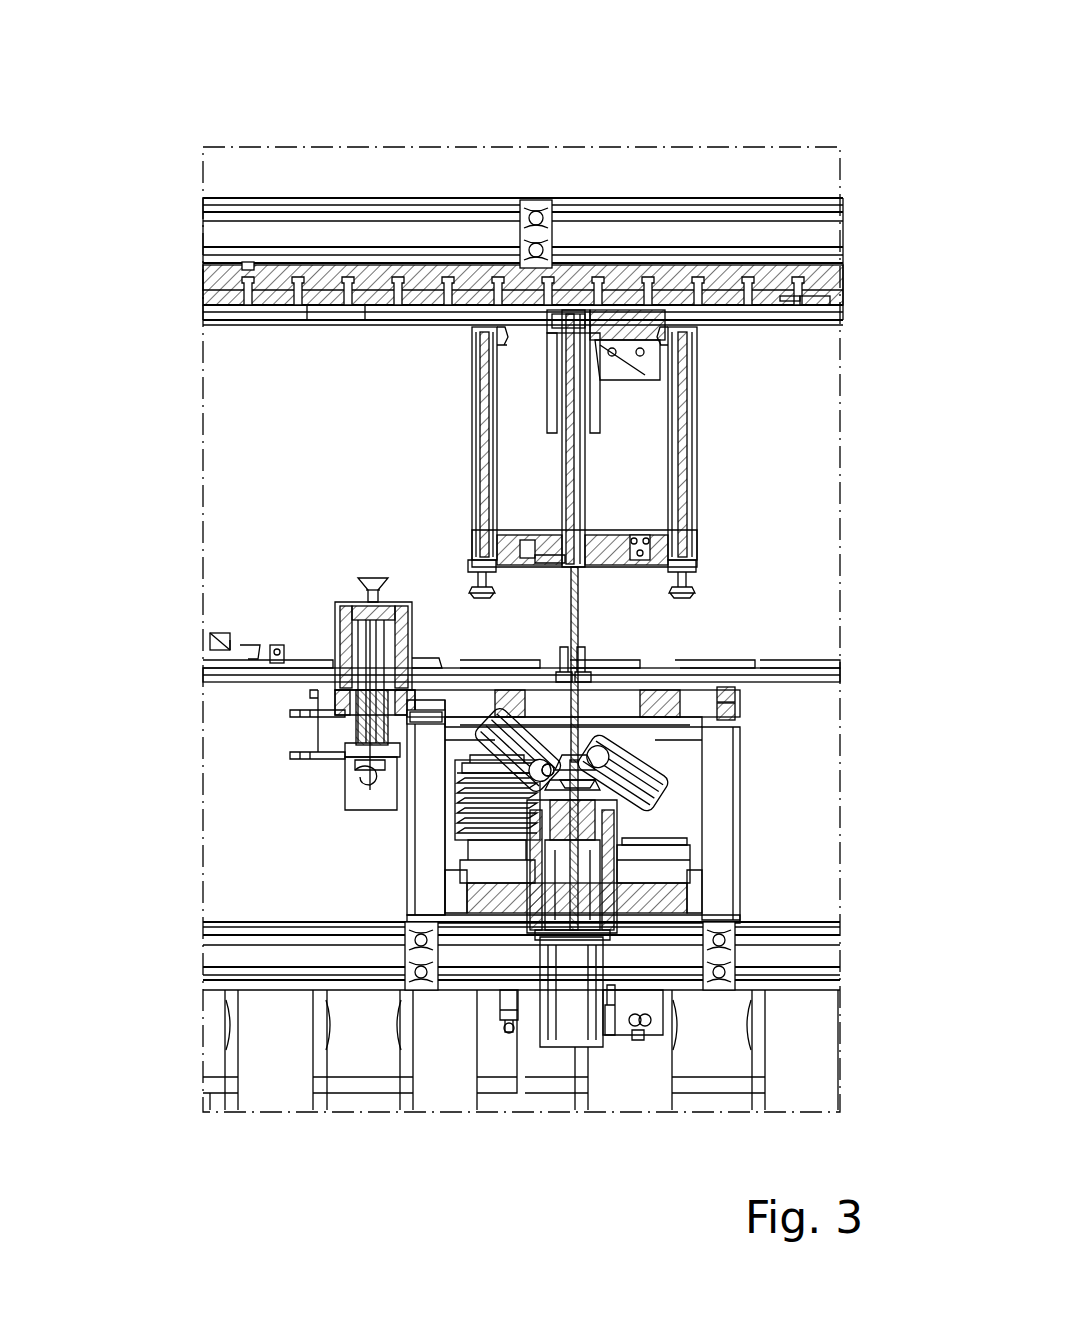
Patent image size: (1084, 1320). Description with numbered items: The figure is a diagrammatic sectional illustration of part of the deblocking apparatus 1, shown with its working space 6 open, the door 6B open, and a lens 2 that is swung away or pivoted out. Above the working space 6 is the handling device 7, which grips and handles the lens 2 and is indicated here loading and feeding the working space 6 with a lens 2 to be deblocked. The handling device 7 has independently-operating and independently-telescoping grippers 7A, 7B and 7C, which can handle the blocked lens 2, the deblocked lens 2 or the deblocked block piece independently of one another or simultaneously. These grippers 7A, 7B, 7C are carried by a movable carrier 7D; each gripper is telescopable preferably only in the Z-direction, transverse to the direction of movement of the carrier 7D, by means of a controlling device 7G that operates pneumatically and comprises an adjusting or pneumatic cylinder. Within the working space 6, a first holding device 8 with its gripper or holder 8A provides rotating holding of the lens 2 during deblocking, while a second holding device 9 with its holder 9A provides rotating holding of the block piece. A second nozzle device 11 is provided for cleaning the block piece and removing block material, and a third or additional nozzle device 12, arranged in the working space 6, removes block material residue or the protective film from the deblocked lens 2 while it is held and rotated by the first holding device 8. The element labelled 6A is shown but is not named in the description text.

The apparatus 1 is at (195, 107).
The lens 2 is at (548, 770).
The working space 6 is at (690, 835).
The bellows 6A is at (470, 840).
The door 6B is at (250, 645).
The handling device 7 is at (375, 240).
The gripper 7A is at (660, 762).
The gripper 7B is at (478, 588).
The gripper 7C is at (696, 592).
The movable carrier 7D is at (640, 518).
The controlling device 7G is at (580, 455).
The first holding device 8 is at (347, 637).
The gripper and/or holder 8A is at (372, 582).
The second holding device 9 is at (604, 851).
The holder 9A is at (650, 820).
The second nozzle device 11 is at (460, 795).
The third nozzle device 12 is at (600, 745).